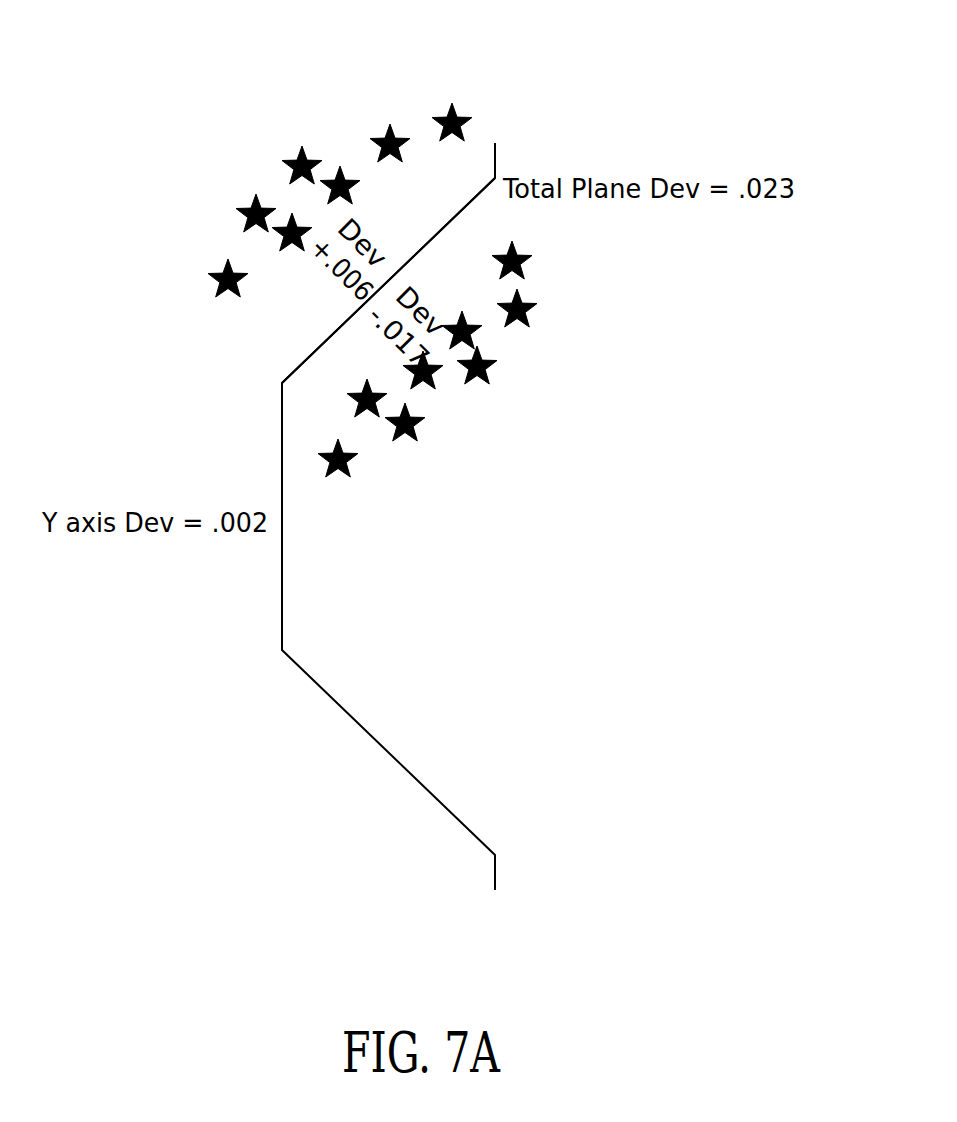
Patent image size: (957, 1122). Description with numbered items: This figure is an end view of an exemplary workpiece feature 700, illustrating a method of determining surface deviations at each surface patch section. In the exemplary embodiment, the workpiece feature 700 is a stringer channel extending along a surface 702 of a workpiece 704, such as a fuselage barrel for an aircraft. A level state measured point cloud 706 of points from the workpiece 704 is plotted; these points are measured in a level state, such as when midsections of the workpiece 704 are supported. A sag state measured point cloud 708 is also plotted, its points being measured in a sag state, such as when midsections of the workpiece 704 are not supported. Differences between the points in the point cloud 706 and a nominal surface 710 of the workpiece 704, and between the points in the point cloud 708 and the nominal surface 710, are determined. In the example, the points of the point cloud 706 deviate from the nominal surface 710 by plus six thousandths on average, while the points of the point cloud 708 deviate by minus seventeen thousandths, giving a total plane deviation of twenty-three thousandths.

The workpiece feature 700 is at (332, 574).
The surface 702 is at (497, 872).
The workpiece 704 is at (182, 413).
The level state measured point cloud 706 is at (410, 91).
The sag state measured point cloud 708 is at (592, 277).
The nominal surface 710 is at (299, 366).